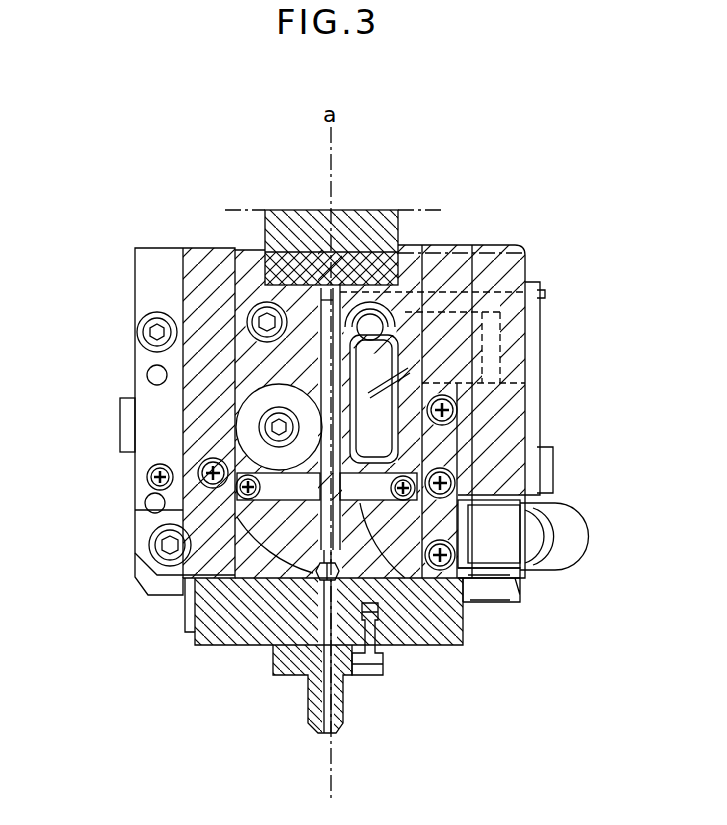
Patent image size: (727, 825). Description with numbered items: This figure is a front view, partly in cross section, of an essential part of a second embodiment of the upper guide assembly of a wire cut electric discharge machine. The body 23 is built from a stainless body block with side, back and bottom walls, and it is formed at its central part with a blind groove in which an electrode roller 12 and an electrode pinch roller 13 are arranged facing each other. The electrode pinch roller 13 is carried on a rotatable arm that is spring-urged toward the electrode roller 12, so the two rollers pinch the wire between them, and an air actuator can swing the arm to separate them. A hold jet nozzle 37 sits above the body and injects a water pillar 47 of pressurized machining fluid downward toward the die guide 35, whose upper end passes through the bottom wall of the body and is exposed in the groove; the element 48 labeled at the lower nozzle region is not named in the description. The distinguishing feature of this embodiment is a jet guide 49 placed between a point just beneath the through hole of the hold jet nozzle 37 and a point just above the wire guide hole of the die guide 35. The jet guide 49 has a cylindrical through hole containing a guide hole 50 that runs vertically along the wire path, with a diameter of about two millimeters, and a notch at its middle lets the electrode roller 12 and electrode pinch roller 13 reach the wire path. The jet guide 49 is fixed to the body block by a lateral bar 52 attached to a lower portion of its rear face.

The electrode roller 12 is at (262, 423).
The electrode pinch roller 13 is at (412, 442).
The body 23 is at (127, 263).
The die guide 35 is at (340, 695).
The hold jet nozzle 37 is at (370, 212).
The water pillar 47 is at (232, 512).
The nozzle 48 is at (305, 678).
The jet guide 49 is at (233, 498).
The guide hole 50 is at (350, 300).
The lateral bar 52 is at (443, 608).